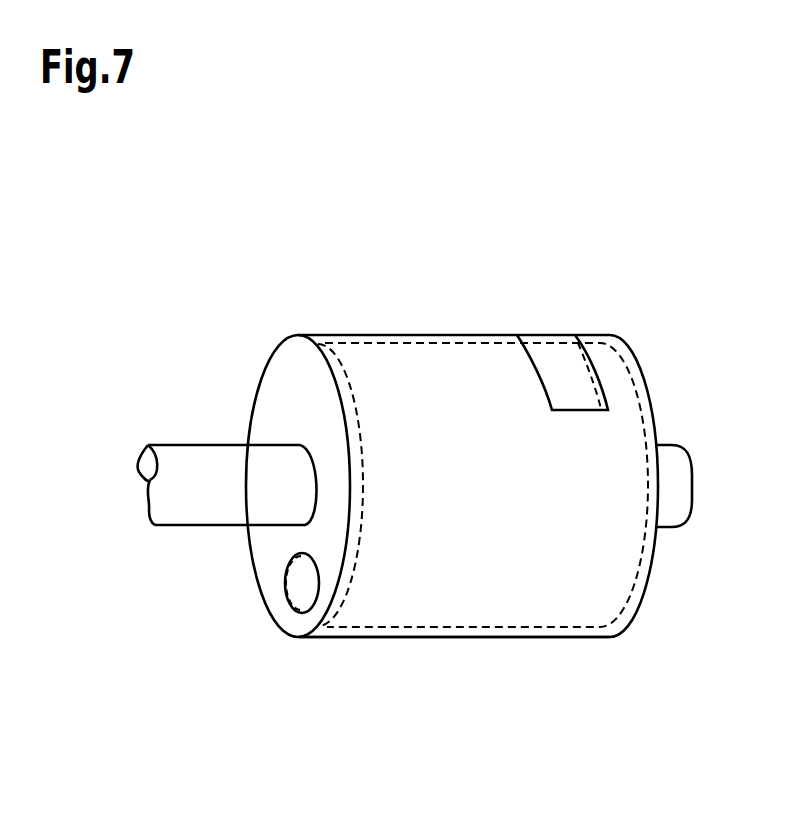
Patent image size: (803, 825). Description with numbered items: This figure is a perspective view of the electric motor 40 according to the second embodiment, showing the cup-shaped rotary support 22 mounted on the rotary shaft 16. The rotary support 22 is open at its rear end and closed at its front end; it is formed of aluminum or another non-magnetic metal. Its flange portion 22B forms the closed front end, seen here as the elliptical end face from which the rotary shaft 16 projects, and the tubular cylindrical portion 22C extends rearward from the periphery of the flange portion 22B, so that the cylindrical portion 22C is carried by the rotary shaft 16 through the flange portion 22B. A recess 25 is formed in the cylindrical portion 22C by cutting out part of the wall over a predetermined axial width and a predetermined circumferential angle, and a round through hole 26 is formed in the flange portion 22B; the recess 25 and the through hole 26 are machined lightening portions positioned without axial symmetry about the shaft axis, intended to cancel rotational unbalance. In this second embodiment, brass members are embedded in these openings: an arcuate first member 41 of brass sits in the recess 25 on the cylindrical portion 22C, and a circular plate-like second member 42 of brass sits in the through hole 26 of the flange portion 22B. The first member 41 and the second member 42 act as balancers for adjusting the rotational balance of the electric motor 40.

The electric motor 40 is at (347, 168).
The rotary support 22 is at (436, 334).
The flange portion 22B is at (290, 358).
The cylindrical portion 22C is at (473, 617).
The rotary shaft 16 is at (193, 455).
The first member 41 is at (552, 348).
The recess 25 is at (602, 382).
The second member 42 is at (303, 597).
The through hole 26 is at (292, 597).